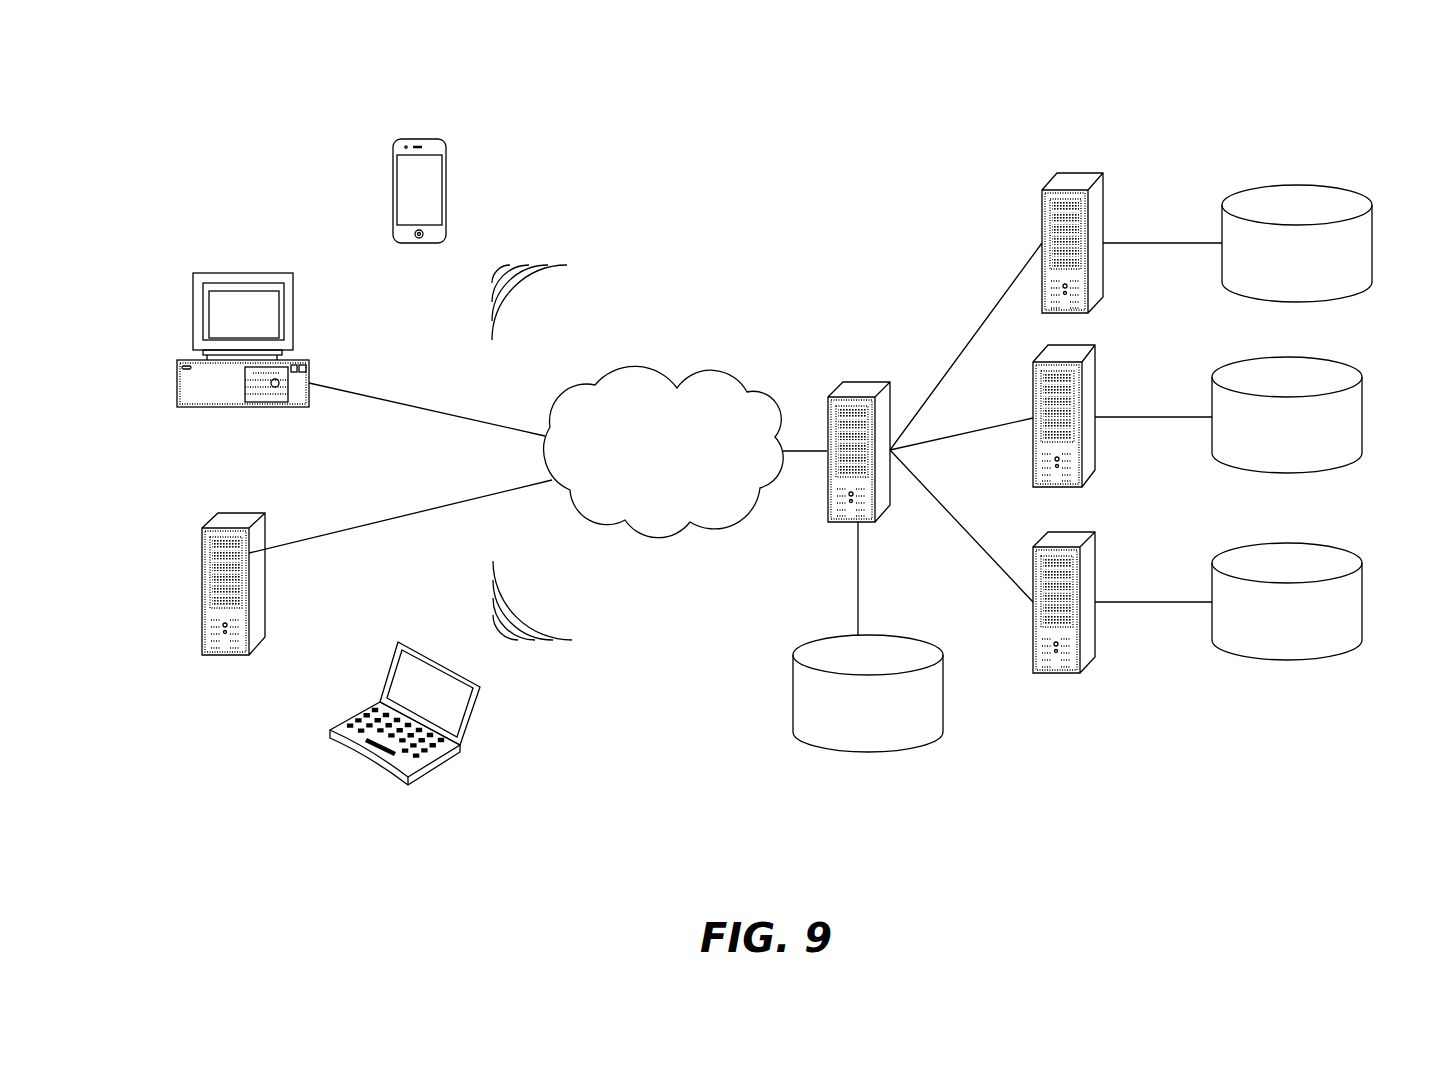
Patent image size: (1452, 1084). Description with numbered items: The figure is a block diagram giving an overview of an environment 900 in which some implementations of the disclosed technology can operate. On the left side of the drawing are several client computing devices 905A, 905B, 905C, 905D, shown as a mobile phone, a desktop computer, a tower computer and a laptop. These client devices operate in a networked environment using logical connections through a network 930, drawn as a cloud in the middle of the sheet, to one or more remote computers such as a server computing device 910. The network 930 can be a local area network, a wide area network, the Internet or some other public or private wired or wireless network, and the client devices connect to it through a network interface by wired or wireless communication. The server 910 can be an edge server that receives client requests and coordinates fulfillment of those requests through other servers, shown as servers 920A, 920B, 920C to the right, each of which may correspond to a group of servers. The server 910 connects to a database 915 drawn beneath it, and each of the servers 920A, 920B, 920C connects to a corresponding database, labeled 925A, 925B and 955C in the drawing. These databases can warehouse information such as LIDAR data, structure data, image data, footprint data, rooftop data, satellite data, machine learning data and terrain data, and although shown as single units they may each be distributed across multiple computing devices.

The environment 900 is at (882, 144).
The client computing device 905A is at (436, 134).
The client computing device 905B is at (283, 275).
The client computing device 905C is at (255, 513).
The client computing device 905D is at (476, 717).
The server computing device 910 is at (868, 382).
The database 915 is at (918, 642).
The server 920A is at (1104, 175).
The server 920B is at (1097, 345).
The server 920C is at (1097, 532).
The database 925A is at (1293, 185).
The database 925B is at (1285, 358).
The database 955C is at (1282, 543).
The network 930 is at (718, 369).